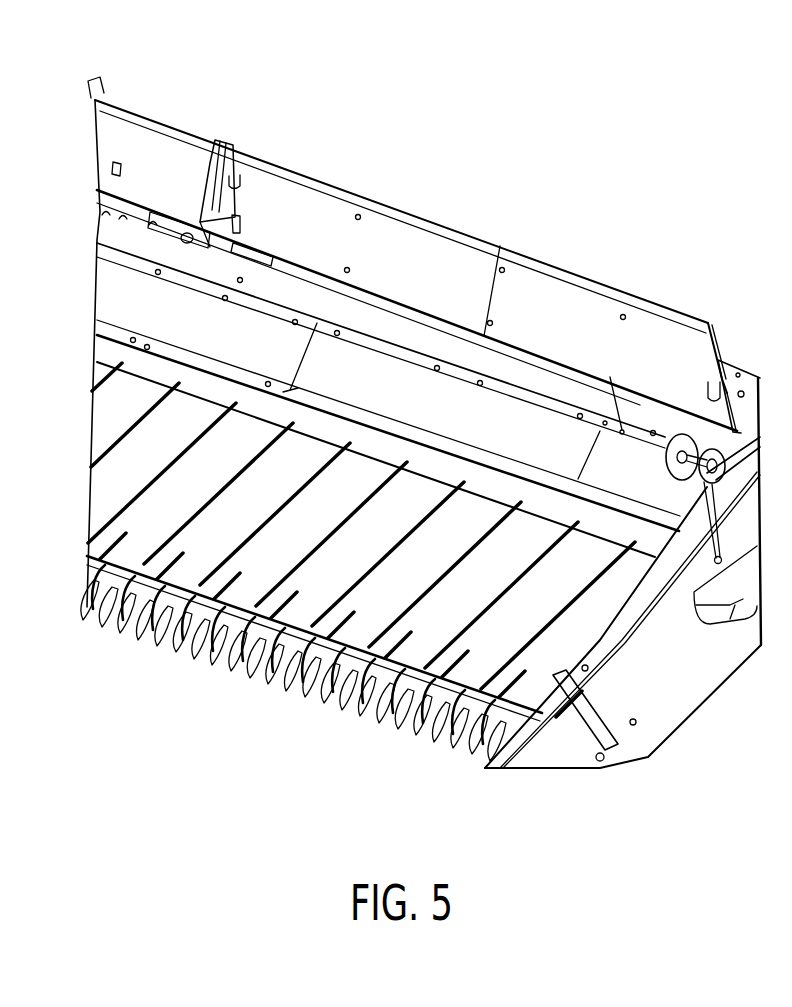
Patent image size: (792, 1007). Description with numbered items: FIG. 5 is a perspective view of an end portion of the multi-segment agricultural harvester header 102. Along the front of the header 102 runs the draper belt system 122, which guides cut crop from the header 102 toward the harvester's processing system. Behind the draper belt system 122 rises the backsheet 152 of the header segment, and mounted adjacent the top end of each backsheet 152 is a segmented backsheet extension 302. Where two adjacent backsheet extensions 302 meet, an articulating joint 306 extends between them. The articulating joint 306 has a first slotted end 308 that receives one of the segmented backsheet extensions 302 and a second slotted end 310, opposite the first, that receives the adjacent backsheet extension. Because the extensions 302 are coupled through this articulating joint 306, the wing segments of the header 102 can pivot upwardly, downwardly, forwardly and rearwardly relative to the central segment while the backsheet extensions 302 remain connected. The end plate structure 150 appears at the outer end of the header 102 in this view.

The header 102 is at (524, 131).
The draper belt system 122 is at (433, 537).
The end plate assembly 150 is at (628, 270).
The backsheet 152 is at (129, 231).
The backsheet extension 302 is at (154, 101).
The articulating joint 306 is at (241, 138).
The first slotted end 308 is at (233, 184).
The second slotted end 310 is at (218, 162).